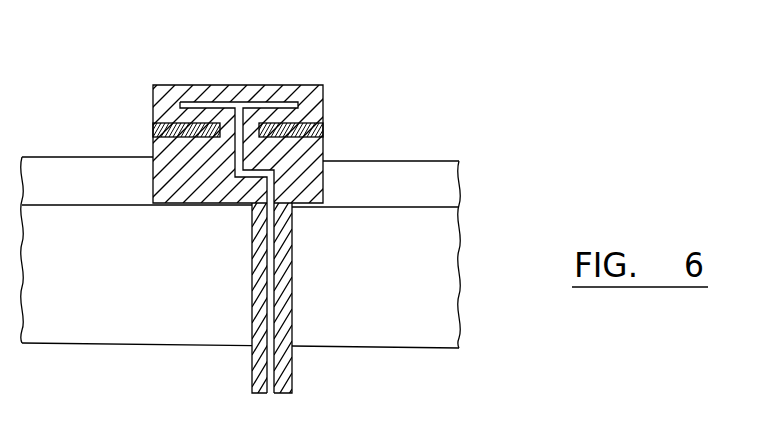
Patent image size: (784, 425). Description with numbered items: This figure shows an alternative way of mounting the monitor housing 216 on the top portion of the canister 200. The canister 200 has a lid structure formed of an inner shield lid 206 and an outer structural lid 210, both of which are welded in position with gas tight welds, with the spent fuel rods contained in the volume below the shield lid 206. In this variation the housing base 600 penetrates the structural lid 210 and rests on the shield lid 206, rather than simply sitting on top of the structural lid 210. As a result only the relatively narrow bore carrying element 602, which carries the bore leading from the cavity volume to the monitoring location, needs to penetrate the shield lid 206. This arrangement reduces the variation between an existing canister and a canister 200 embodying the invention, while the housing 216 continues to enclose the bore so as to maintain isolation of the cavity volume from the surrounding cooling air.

The monitor housing 216 is at (225, 219).
The canister 200 is at (257, 116).
The outer structural lid 210 is at (378, 182).
The inner shield lid 206 is at (418, 317).
The housing base 600 is at (296, 248).
The bore carrying element 602 is at (285, 310).